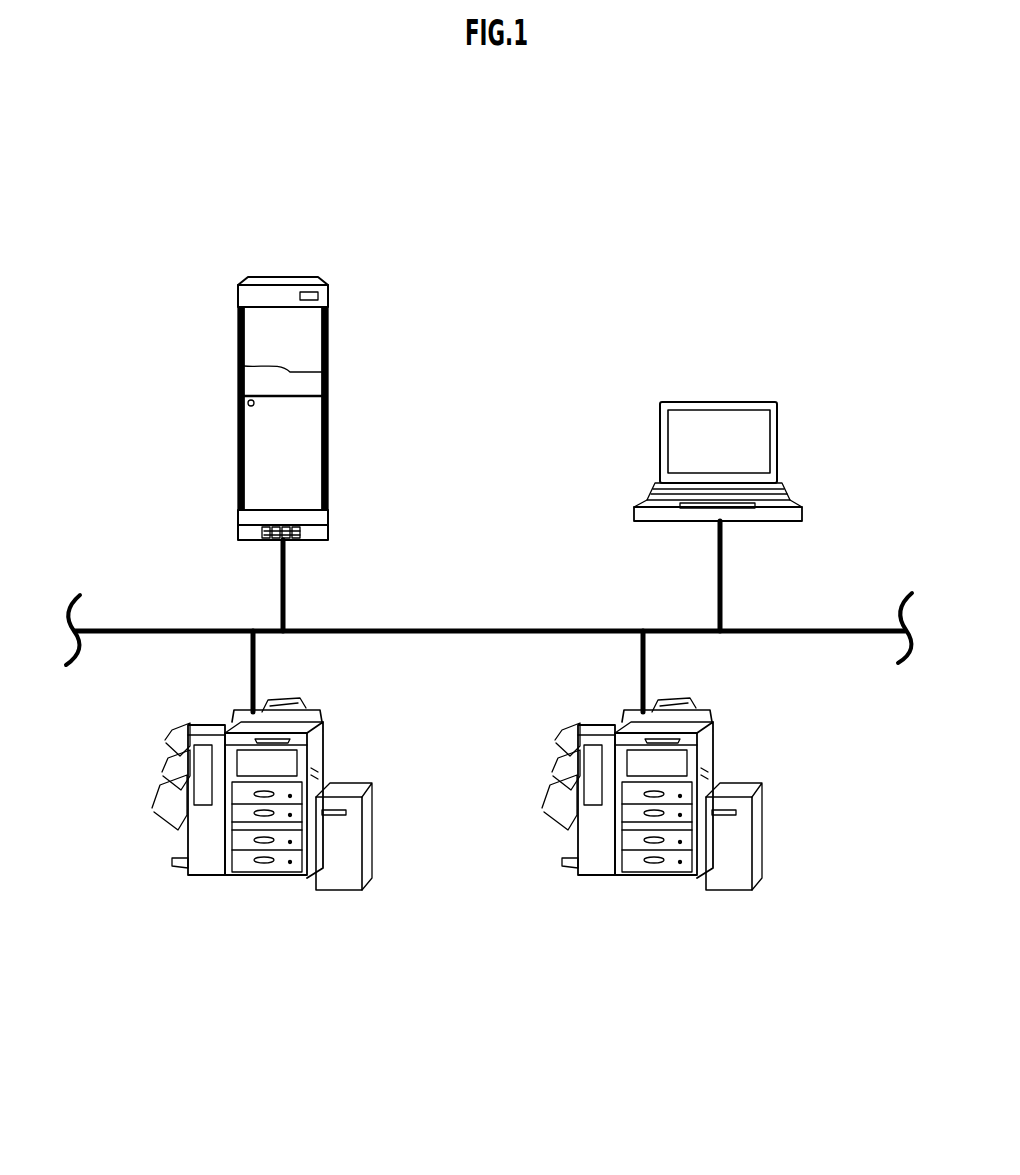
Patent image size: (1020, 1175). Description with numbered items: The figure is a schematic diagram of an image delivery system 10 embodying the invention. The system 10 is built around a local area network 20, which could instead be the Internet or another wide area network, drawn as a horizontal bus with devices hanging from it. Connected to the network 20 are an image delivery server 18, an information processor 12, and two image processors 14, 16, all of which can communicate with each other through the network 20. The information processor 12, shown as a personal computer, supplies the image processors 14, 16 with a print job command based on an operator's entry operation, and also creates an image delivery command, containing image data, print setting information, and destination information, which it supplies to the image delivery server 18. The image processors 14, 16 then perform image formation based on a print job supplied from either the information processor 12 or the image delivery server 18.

The image delivery system 10 is at (596, 336).
The information processor 12 is at (720, 402).
The image processor 14 is at (202, 860).
The image processor 16 is at (595, 855).
The image delivery server 18 is at (296, 277).
The local area network 20 is at (458, 628).